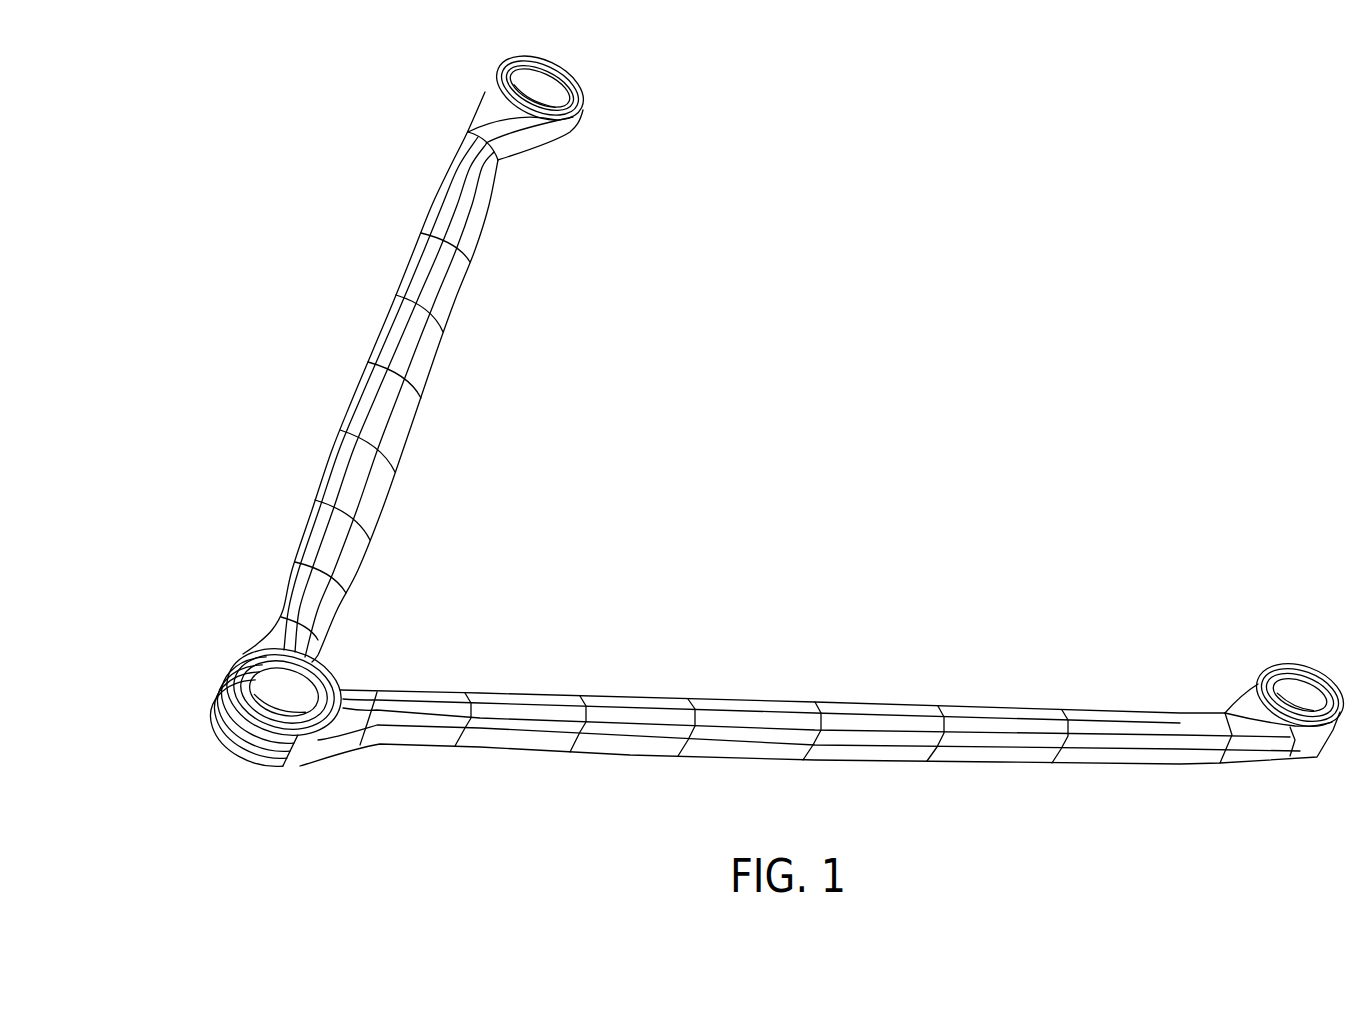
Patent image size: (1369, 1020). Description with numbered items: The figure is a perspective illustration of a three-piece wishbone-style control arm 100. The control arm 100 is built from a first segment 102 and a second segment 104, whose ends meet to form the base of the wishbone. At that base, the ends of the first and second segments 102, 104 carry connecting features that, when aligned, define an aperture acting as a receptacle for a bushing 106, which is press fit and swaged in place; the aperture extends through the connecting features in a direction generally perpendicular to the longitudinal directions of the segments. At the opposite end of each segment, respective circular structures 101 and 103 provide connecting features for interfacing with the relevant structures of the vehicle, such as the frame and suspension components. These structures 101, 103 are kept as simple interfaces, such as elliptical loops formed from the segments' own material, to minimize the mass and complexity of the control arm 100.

The control arm 100 is at (290, 420).
The circular structure 101 is at (582, 88).
The first segment 102 is at (485, 350).
The circular structure 103 is at (1262, 677).
The second segment 104 is at (542, 780).
The bushing 106 is at (228, 687).